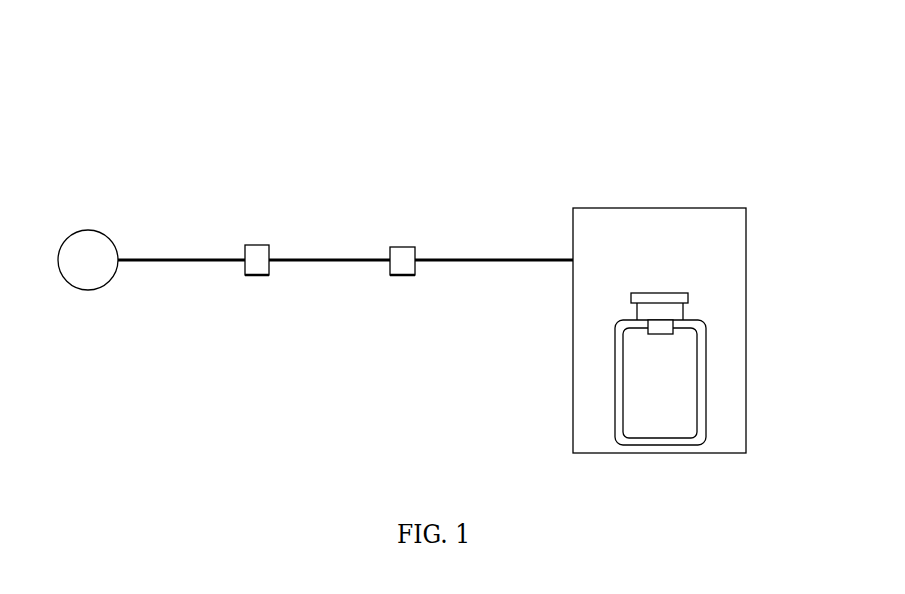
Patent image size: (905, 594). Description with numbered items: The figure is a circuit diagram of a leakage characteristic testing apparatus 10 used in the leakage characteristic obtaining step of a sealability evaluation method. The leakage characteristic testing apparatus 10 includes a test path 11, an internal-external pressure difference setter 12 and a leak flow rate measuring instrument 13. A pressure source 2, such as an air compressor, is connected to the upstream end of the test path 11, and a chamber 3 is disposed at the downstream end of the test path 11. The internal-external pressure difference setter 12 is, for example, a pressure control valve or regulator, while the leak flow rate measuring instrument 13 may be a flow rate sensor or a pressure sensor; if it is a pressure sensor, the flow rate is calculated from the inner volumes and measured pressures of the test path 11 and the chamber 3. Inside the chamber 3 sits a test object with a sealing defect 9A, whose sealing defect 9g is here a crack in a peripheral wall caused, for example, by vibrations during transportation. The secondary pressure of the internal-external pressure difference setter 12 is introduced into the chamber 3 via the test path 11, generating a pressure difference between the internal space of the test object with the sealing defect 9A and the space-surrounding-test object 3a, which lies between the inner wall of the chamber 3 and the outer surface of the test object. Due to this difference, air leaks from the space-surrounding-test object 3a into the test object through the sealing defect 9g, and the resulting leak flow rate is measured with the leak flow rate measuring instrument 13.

The leakage characteristic testing apparatus 10 is at (330, 168).
The test path 11 is at (315, 263).
The pressure source 2 is at (63, 240).
The internal-external pressure difference setter 12 is at (250, 245).
The leak flow rate measuring instrument 13 is at (412, 247).
The chamber 3 is at (702, 207).
The space-surrounding-test object 3a is at (723, 282).
The test object with a sealing defect 9A is at (615, 385).
The sealing defect 9g is at (700, 372).